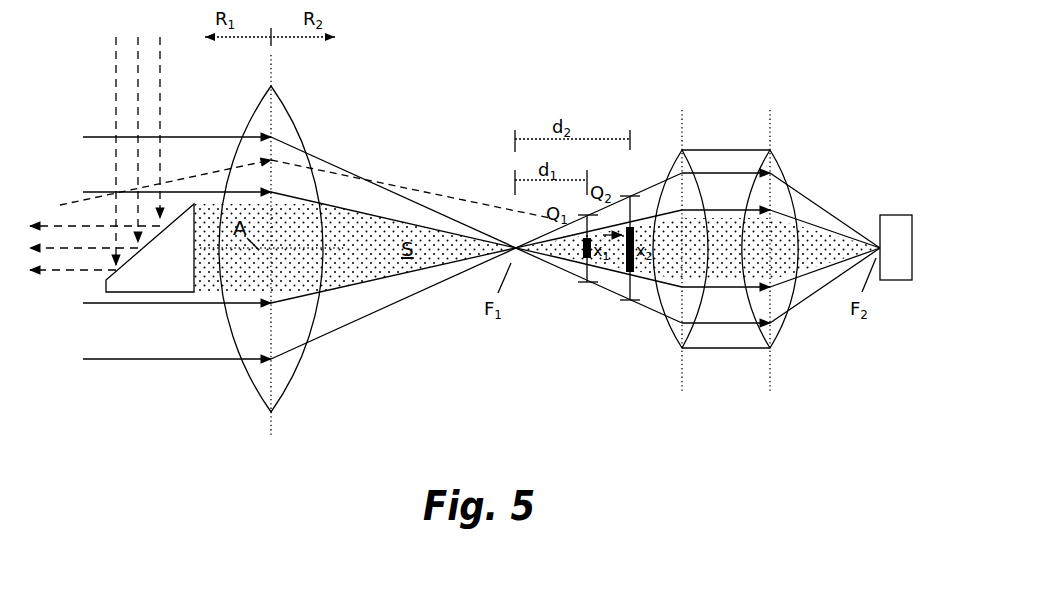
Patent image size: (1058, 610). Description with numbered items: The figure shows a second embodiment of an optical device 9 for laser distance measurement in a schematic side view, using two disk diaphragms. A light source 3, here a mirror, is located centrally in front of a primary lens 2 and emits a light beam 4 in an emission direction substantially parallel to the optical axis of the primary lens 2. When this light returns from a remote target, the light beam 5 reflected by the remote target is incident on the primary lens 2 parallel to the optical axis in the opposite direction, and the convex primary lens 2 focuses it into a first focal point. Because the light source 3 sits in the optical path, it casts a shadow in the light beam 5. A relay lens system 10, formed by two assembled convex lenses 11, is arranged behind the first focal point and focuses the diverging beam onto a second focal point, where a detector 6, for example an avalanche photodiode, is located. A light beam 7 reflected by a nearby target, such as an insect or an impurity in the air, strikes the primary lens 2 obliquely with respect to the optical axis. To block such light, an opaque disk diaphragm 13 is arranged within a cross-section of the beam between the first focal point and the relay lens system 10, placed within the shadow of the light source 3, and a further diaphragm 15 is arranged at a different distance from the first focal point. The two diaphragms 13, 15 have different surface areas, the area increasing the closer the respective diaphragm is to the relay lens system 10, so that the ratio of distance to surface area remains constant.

The primary lens 2 is at (284, 121).
The light source 3 is at (150, 248).
The emitted light beam 4 is at (70, 225).
The light beam reflected by the remote target 5 is at (195, 360).
The detector 6 is at (898, 217).
The light beam reflected by the nearby target 7 is at (433, 194).
The optical device 9 is at (830, 38).
The relay lens system 10 is at (731, 231).
The convex lenses 11 is at (675, 168).
The diaphragm 13 is at (580, 262).
The further diaphragm 15 is at (623, 259).